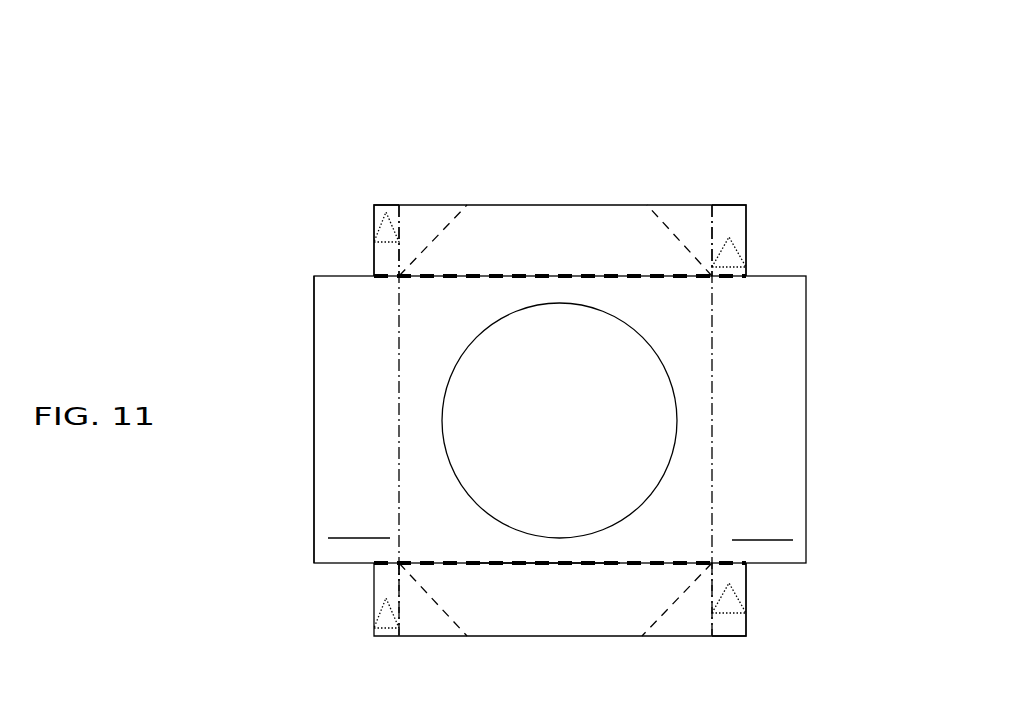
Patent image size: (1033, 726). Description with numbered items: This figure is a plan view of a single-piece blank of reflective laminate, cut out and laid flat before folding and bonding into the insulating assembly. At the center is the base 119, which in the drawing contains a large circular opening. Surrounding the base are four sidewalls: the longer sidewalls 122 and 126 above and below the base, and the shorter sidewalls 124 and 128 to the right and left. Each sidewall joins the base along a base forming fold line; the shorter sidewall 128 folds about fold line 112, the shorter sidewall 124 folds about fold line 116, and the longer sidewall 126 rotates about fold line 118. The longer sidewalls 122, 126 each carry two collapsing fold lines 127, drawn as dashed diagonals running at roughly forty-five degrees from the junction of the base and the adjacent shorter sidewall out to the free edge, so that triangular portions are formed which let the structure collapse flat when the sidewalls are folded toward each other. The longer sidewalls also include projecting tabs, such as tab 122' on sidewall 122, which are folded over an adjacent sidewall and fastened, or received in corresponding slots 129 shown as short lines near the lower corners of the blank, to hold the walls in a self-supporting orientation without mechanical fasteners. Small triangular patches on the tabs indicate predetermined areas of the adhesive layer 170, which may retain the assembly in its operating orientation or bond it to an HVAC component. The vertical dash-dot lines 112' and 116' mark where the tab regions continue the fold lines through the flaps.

The base forming fold line 112 is at (271, 420).
The first fold line upper portion 112' is at (321, 239).
The base forming fold line 116 is at (821, 420).
The second fold line lower portion 116' is at (285, 564).
The base forming fold line 118 is at (544, 565).
The base 119 is at (602, 293).
The sidewall 122 is at (560, 186).
The projecting tab 122' is at (316, 206).
The sidewall 124 is at (782, 297).
The sidewall 126 is at (595, 615).
The collapsing fold line 127 is at (442, 232).
The sidewall 128 is at (335, 380).
The slot 129 is at (316, 538).
The adhesive layer 170 is at (374, 242).